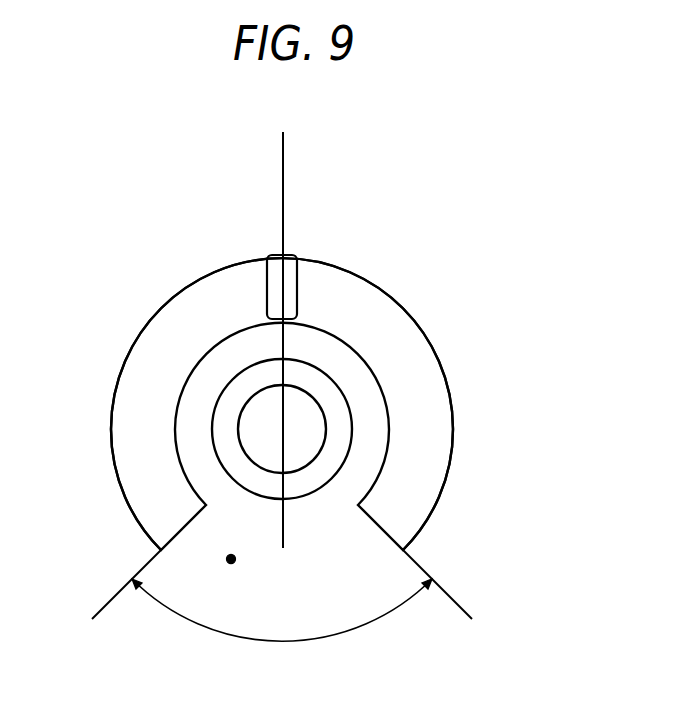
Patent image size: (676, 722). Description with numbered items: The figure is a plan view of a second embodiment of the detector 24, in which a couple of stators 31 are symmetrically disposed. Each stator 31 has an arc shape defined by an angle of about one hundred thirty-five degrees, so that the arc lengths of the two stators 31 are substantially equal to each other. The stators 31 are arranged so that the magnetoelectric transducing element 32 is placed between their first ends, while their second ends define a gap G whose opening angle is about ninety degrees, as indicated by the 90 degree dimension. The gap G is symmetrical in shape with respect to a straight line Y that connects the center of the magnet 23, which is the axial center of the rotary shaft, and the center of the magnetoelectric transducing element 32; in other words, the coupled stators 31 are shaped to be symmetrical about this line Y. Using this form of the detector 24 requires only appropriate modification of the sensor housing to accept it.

The detector 24 is at (438, 272).
The stator 31 is at (137, 337).
The magnetoelectric transducing element 32 is at (275, 290).
The magnet 23 is at (212, 431).
The straight line Y is at (283, 178).
The gap G is at (232, 563).
The 90 degree opening angle 90 is at (282, 610).